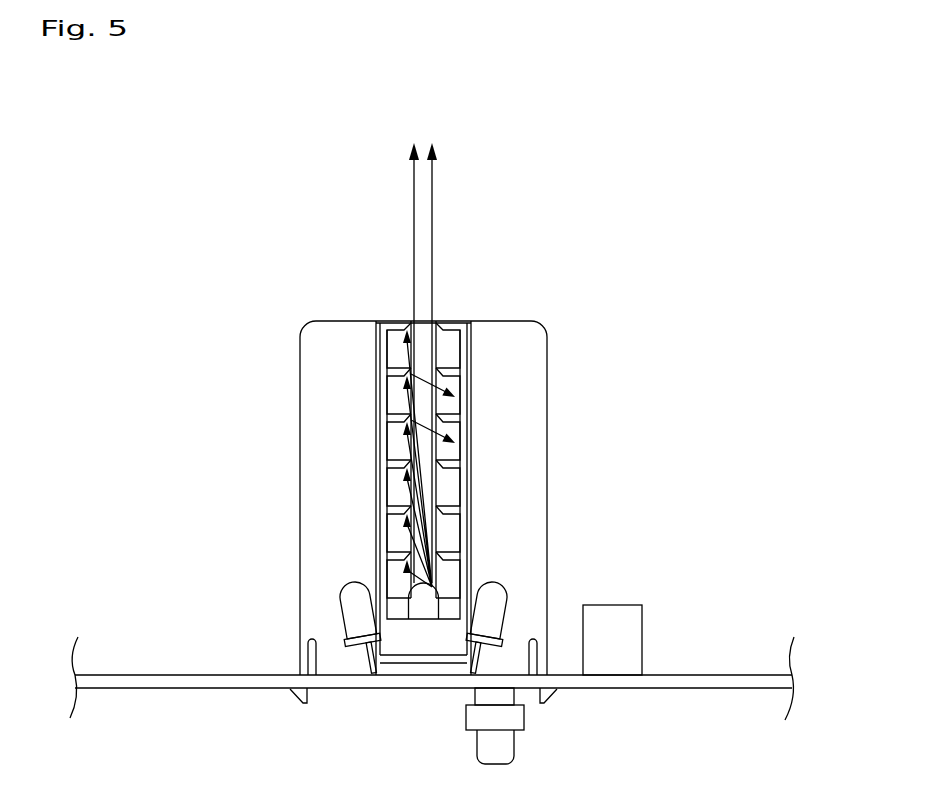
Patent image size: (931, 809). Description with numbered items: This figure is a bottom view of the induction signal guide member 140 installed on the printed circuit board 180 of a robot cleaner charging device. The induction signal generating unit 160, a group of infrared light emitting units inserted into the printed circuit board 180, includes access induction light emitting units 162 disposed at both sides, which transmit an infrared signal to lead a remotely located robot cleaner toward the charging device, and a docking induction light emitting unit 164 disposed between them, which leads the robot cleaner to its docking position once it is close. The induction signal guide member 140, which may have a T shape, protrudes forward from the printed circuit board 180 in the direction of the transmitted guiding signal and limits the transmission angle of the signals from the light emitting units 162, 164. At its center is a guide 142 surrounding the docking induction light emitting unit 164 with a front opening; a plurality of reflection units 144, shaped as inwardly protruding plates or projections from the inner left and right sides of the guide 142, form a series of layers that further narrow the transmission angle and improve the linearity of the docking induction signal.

The induction signal guide member 140 is at (554, 325).
The guide 142 is at (376, 336).
The reflection unit 144 is at (398, 566).
The induction signal generating unit 160 is at (203, 537).
The access induction light emitting unit 162 is at (482, 621).
The docking induction light emitting unit 164 is at (415, 602).
The printed circuit board 180 is at (731, 682).